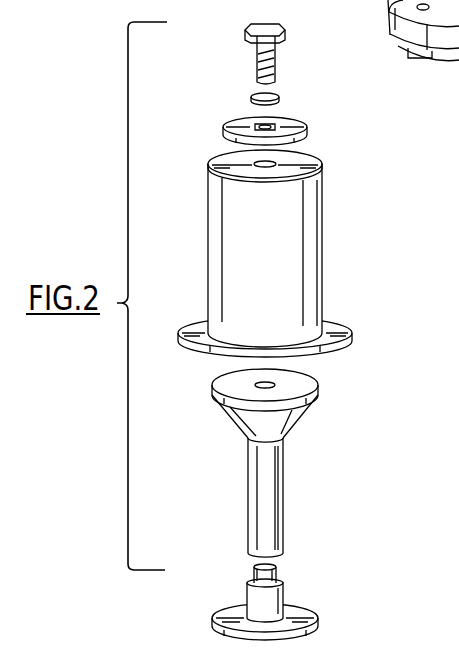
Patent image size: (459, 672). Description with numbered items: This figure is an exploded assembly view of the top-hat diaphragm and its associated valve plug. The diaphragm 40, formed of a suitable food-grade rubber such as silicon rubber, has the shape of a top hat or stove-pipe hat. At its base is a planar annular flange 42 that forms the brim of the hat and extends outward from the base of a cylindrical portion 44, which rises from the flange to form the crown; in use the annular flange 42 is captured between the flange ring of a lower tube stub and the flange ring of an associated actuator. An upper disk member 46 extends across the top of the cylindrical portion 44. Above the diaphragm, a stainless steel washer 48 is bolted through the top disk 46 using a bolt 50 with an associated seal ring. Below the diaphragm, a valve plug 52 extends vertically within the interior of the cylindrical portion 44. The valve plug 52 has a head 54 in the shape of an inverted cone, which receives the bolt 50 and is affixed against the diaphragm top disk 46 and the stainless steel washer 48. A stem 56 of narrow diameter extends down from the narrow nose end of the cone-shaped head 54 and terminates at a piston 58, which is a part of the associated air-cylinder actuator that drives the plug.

The diaphragm 40 is at (362, 236).
The annular flange 42 is at (349, 322).
The cylindrical portion 44 is at (312, 288).
The upper disk member 46 is at (310, 162).
The stainless steel washer 48 is at (226, 125).
The bolt 50 is at (275, 75).
The valve plug 52 is at (388, 392).
The head 54 is at (232, 425).
The stem 56 is at (283, 510).
The piston 58 is at (321, 618).